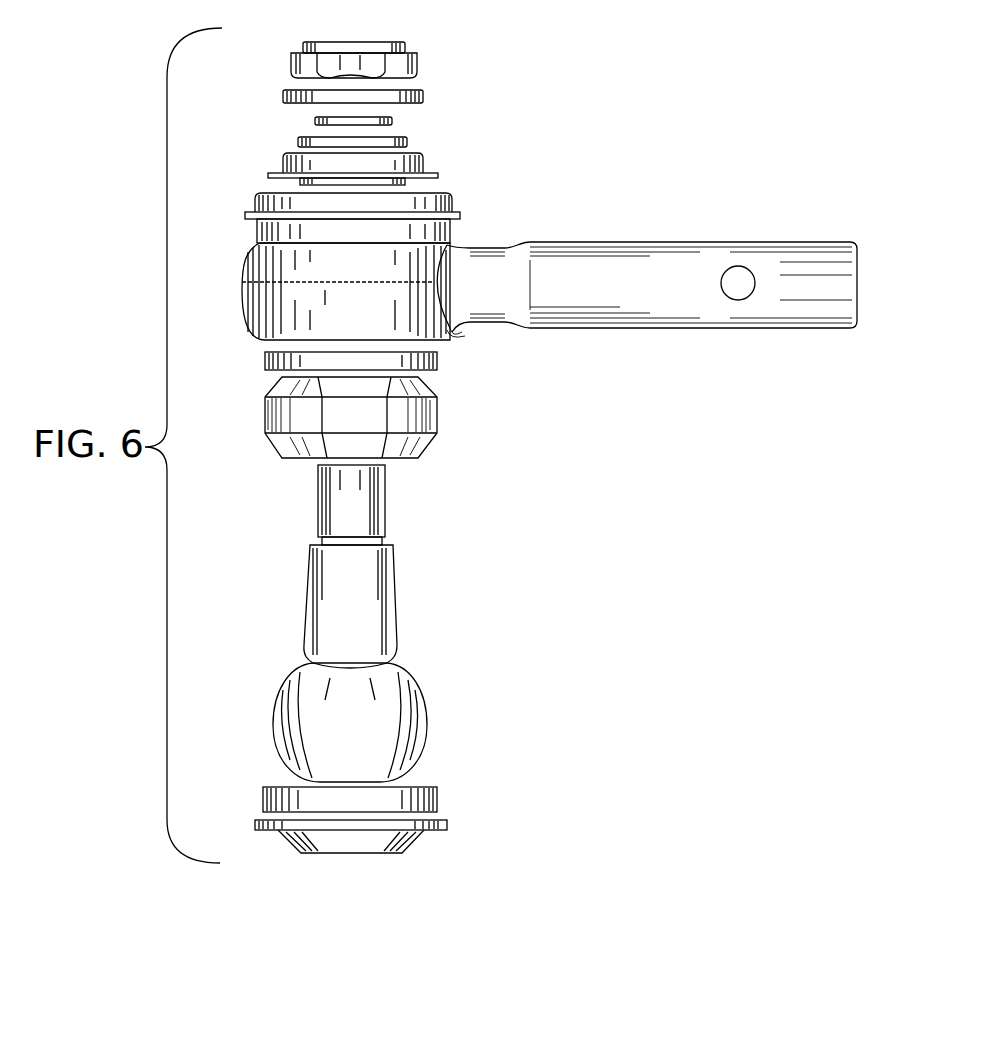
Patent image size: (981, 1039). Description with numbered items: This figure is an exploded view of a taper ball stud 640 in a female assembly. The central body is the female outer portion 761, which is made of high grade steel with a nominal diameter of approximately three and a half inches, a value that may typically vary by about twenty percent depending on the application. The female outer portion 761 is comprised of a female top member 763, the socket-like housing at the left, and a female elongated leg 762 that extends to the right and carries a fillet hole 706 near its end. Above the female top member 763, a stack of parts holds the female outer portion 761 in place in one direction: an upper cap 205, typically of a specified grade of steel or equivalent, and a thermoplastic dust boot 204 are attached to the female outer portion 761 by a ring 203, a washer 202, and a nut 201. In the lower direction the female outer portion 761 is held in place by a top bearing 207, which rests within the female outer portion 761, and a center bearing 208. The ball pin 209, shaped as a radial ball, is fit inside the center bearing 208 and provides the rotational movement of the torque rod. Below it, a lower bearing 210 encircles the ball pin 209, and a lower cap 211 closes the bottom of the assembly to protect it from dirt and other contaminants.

The nut 201 is at (421, 55).
The washer 202 is at (428, 98).
The ring 203 is at (414, 139).
The dust boot 204 is at (430, 163).
The upper cap 205 is at (459, 203).
The top bearing 207 is at (447, 370).
The center bearing 208 is at (269, 452).
The ball pin 209 is at (282, 682).
The lower bearing 210 is at (261, 799).
The lower cap 211 is at (267, 836).
The ball stud 640 is at (597, 689).
The fillet hole 706 is at (725, 306).
The female outer portion 761 is at (516, 290).
The female elongated leg 762 is at (464, 324).
The female top member 763 is at (246, 247).